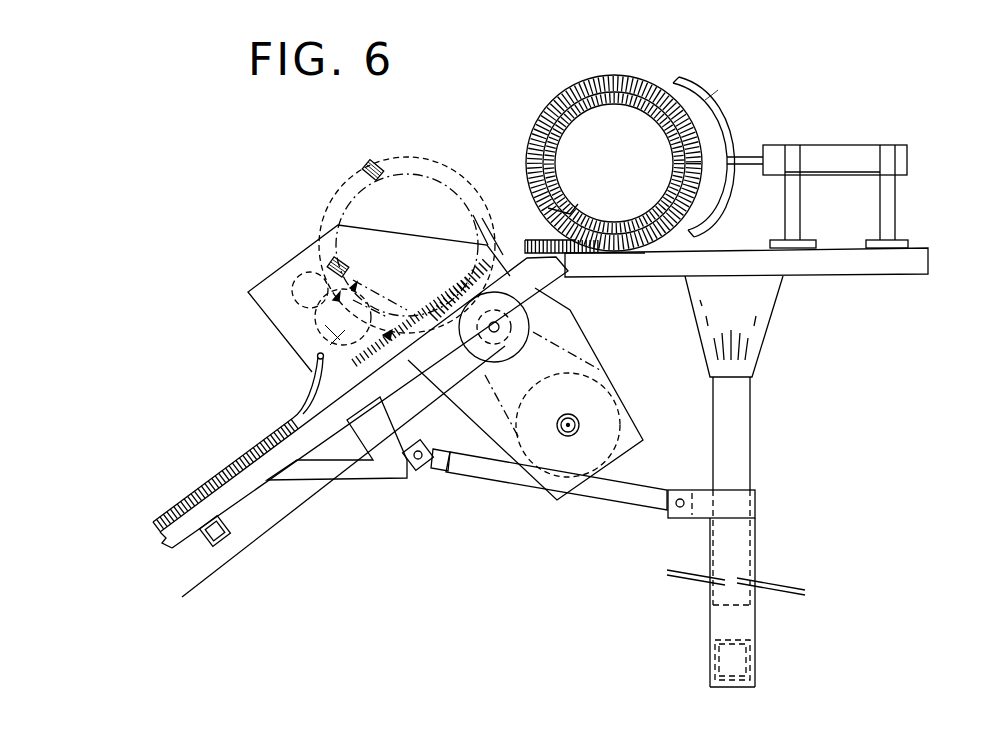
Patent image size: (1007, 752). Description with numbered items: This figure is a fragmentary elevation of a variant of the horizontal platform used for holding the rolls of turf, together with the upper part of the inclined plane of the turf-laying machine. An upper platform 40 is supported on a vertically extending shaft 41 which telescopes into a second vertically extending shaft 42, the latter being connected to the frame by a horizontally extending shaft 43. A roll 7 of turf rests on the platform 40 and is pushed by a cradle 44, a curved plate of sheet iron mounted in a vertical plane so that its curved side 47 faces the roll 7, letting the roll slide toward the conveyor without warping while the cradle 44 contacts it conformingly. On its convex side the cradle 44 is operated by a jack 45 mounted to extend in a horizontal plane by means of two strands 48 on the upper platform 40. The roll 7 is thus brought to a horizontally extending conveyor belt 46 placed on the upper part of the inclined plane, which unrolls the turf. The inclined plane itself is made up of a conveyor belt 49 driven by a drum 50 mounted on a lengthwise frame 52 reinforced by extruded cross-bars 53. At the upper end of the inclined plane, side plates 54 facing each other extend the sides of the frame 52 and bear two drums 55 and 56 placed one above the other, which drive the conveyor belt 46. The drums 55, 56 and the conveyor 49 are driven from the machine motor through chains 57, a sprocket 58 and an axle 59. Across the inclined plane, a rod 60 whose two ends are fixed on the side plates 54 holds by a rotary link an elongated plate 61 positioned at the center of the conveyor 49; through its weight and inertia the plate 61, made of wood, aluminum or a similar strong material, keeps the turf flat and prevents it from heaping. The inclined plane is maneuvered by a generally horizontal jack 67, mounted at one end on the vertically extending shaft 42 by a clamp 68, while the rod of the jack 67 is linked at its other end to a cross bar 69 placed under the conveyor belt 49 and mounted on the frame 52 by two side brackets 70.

The roll of turf 7 is at (555, 105).
The upper platform 40 is at (887, 263).
The vertically extending shaft 41 is at (740, 432).
The second vertically extending shaft 42 is at (720, 622).
The horizontally extending shaft 43 is at (758, 662).
The cradle 44 is at (710, 122).
The jack 45 is at (840, 155).
The horizontally extending conveyor belt 46 is at (317, 318).
The curved side 47 is at (697, 102).
The strands 48 is at (890, 203).
The conveyor belt 49 is at (142, 548).
The drum 50 is at (520, 318).
The lengthwise frame 52 is at (152, 575).
The extruded cross-bars 53 is at (228, 545).
The side plates 54 is at (323, 230).
The drum 55 is at (300, 280).
The drum 56 is at (320, 333).
The chains 57 is at (405, 288).
The sprocket 58 is at (630, 397).
The axle 59 is at (633, 455).
The rod 60 is at (310, 362).
The elongated plate 61 is at (187, 495).
The jack 67 is at (620, 495).
The clamp 68 is at (735, 487).
The cross bar 69 is at (420, 467).
The side brackets 70 is at (380, 475).